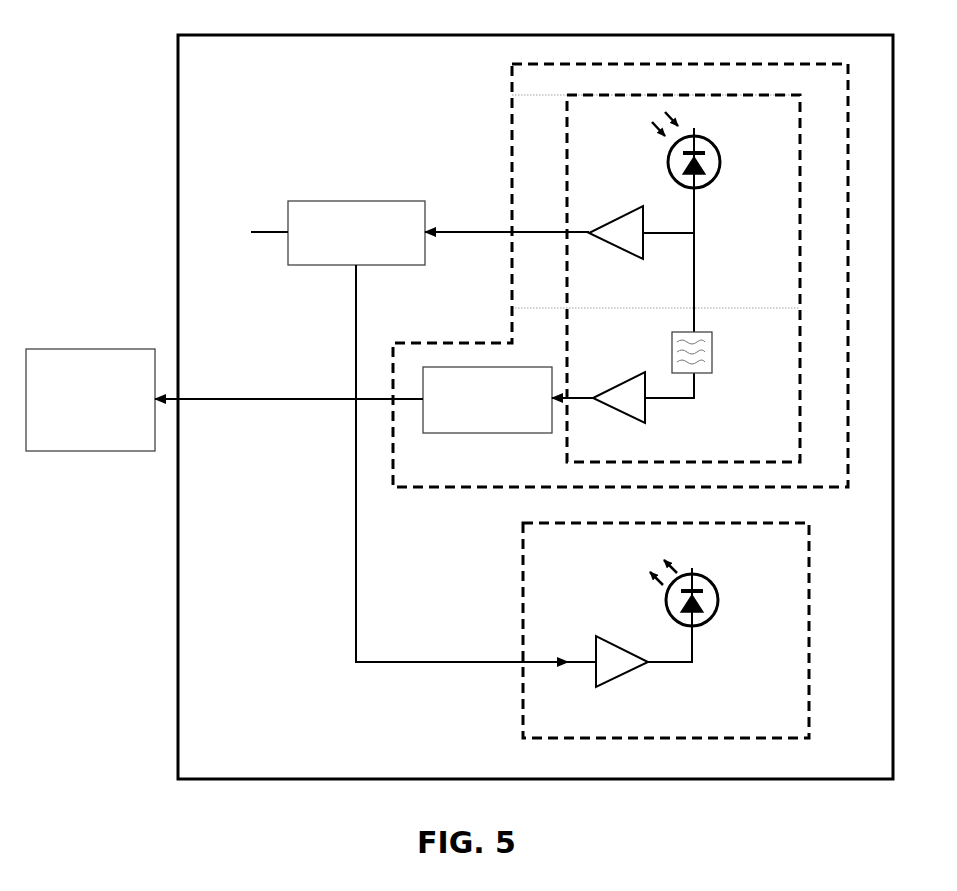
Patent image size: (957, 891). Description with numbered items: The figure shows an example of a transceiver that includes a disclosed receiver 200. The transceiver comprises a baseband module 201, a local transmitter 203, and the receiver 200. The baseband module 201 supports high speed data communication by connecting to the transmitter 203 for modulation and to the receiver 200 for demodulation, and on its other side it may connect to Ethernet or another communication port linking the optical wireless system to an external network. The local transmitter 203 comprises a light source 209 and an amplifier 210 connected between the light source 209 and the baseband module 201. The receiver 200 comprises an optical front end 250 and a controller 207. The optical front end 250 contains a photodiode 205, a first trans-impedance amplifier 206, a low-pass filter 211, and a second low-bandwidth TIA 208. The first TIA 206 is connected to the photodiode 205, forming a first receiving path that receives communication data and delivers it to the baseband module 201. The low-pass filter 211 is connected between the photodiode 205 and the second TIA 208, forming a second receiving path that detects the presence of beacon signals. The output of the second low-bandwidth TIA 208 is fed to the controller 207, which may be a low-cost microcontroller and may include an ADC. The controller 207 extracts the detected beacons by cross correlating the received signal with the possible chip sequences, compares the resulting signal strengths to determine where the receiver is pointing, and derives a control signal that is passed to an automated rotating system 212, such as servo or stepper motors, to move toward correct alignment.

The receiver 200 is at (505, 86).
The baseband module 201 is at (356, 200).
The local transmitter 203 is at (809, 640).
The photodiode 205 is at (723, 165).
The first trans-impedance amplifier 206 is at (618, 215).
The controller 207 is at (487, 433).
The second low-bandwidth TIA 208 is at (615, 382).
The light source 209 is at (720, 608).
The amplifier 210 is at (592, 645).
The low-pass filter 211 is at (712, 340).
The automated rotating system 212 is at (90, 451).
The optical front end 250 is at (683, 278).